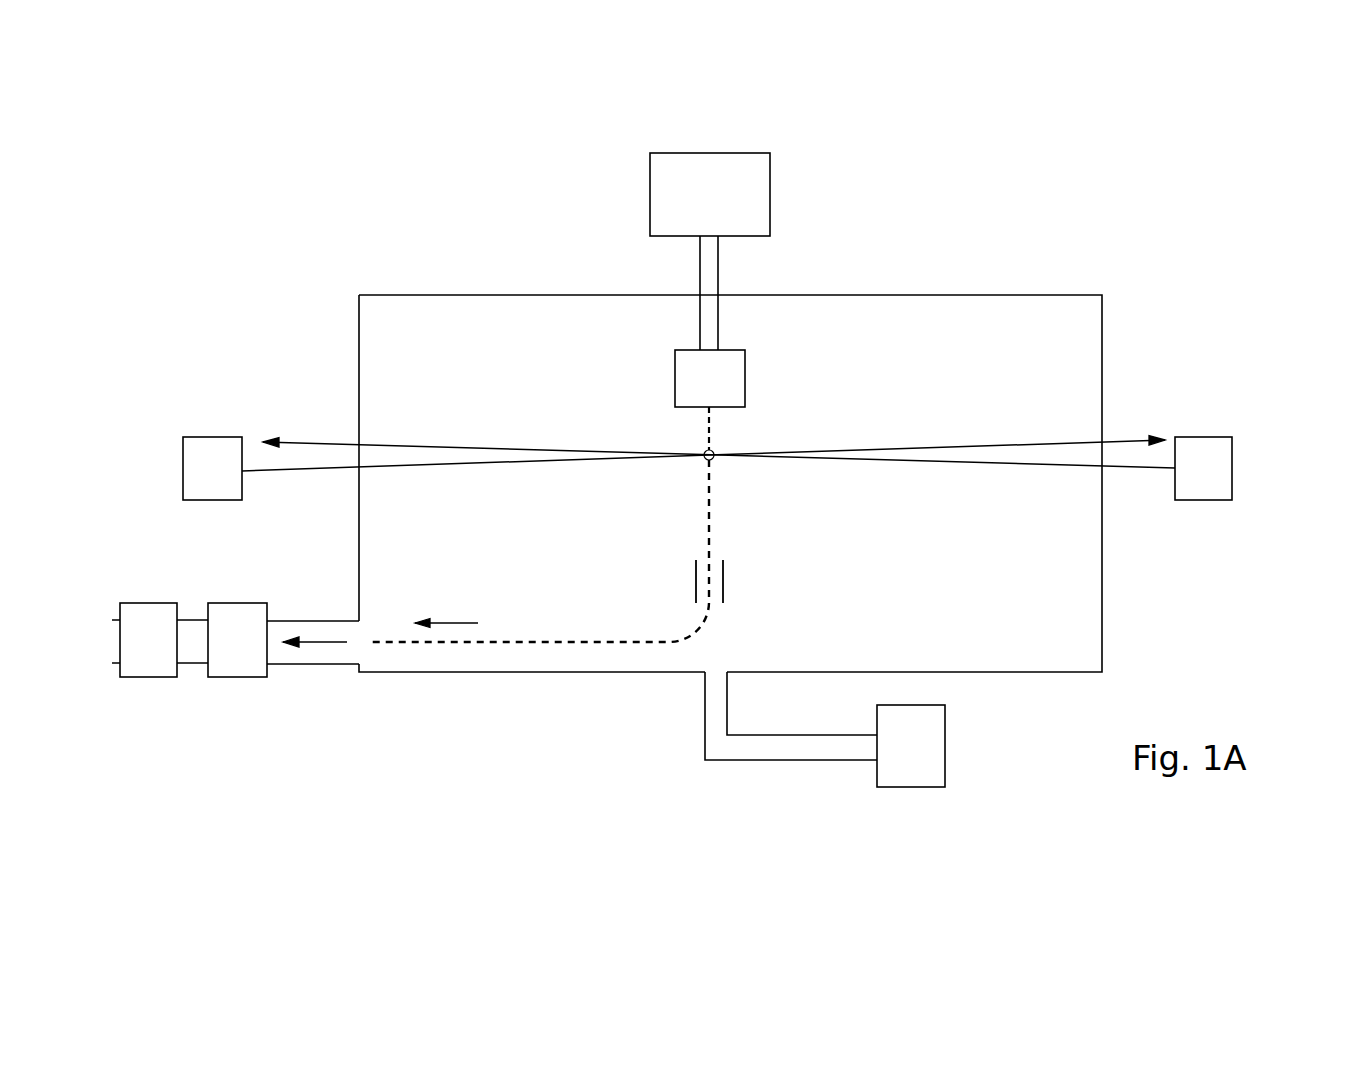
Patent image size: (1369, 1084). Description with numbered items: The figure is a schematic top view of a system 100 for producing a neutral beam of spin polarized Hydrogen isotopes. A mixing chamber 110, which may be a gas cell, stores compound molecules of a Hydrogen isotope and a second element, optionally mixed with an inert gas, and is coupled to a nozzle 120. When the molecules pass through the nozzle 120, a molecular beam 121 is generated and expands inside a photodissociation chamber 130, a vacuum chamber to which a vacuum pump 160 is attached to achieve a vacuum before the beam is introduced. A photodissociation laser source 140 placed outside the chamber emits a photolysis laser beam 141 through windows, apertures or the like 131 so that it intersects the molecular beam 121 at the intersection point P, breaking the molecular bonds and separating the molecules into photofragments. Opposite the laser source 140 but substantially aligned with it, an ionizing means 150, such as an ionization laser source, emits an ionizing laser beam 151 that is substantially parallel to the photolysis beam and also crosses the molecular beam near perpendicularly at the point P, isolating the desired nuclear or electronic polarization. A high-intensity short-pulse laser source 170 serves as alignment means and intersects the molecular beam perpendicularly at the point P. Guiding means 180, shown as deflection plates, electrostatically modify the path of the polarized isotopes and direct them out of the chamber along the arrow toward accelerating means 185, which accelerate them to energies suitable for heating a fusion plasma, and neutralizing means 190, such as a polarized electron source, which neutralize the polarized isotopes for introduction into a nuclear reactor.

The system 100 is at (385, 260).
The mixing chamber 110 is at (773, 182).
The nozzle 120 is at (745, 380).
The molecular beam 121 is at (704, 441).
The photodissociation chamber 130 is at (1035, 295).
The windows, apertures or the like 131 is at (355, 472).
The photodissociation laser source 140 is at (1195, 437).
The photolysis laser beam 141 is at (333, 443).
The ionizing means 150 is at (218, 437).
The ionizing laser beam 151 is at (1123, 438).
The vacuum pump 160 is at (912, 787).
The high-intensity short-pulse laser source 170 is at (702, 467).
The guiding means 180 is at (725, 582).
The accelerating means 185 is at (255, 678).
The neutralizing/depolarizing means 190 is at (133, 680).
The intersection point P is at (718, 463).